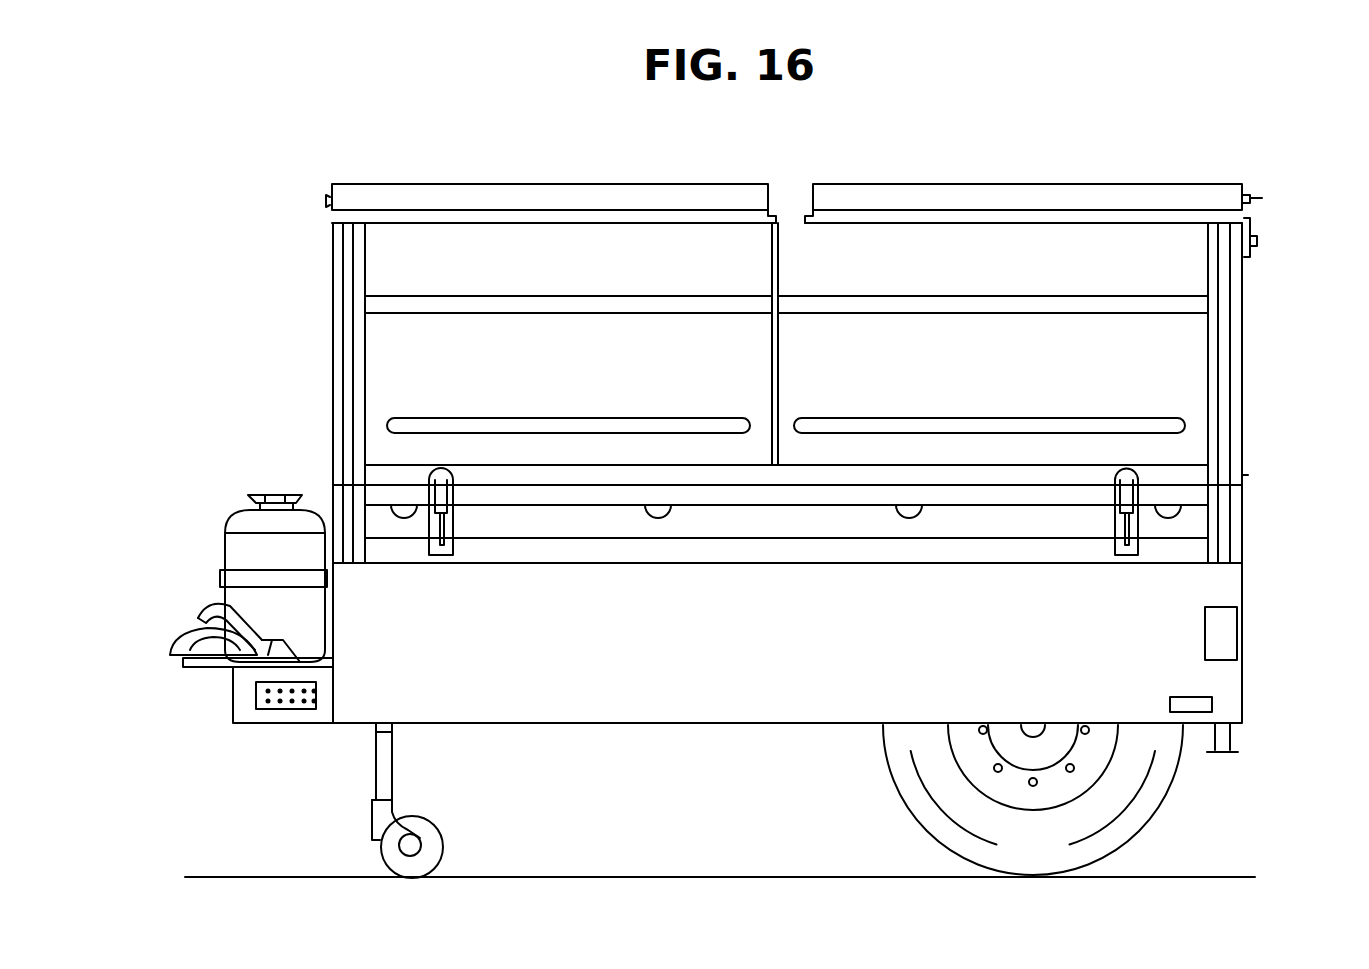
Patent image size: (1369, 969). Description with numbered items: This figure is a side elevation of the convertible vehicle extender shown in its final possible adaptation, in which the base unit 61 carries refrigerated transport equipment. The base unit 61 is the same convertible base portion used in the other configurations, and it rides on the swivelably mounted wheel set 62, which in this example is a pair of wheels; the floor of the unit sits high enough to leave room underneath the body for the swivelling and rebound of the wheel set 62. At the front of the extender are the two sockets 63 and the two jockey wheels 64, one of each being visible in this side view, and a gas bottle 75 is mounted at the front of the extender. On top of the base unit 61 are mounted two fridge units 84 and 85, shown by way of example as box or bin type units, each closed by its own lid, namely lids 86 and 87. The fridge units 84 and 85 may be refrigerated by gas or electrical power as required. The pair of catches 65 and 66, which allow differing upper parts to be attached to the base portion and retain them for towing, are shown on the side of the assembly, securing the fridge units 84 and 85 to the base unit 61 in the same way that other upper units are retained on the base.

The vehicle extender base unit 61 is at (715, 712).
The wheel set 62 is at (1153, 810).
The socket 63 is at (180, 637).
The jockey wheel 64 is at (385, 762).
The catch 65 is at (440, 490).
The catch 66 is at (1128, 488).
The gas bottle 75 is at (245, 520).
The fridge unit 84 is at (385, 258).
The fridge unit 85 is at (1200, 305).
The lid 86 is at (433, 192).
The lid 87 is at (1160, 192).